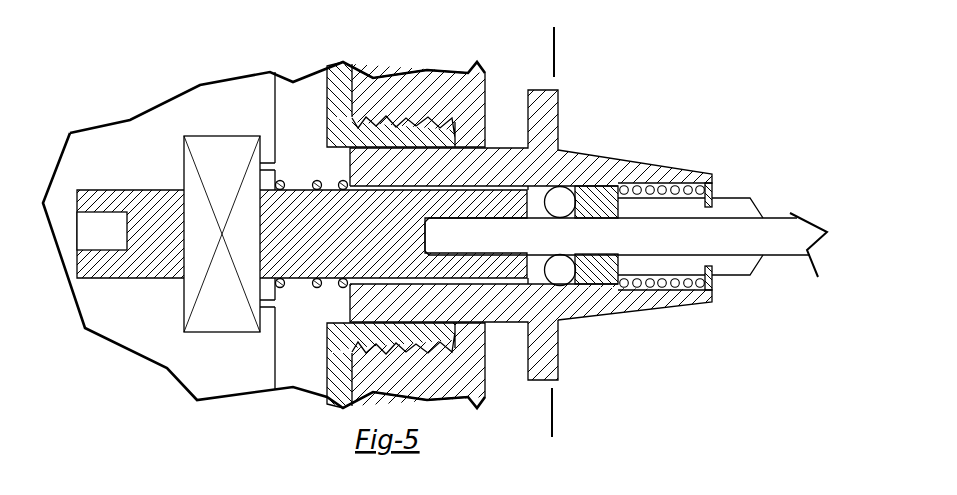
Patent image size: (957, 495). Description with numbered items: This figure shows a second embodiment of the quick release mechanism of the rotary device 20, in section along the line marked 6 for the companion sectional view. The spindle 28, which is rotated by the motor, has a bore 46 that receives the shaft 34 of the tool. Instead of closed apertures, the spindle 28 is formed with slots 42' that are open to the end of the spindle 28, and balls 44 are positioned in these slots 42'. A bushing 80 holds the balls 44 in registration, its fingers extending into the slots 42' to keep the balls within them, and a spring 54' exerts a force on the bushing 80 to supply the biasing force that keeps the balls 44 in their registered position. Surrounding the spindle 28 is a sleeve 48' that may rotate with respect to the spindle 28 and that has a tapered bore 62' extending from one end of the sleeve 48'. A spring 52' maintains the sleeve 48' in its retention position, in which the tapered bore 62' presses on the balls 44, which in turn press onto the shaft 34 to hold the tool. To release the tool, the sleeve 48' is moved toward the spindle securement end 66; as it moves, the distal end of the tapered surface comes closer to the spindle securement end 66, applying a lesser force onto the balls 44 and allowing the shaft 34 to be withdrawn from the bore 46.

The rotary device 20 is at (396, 72).
The spindle 28 is at (143, 260).
The shaft 34 is at (797, 240).
The slots 42' is at (764, 236).
The balls 44 is at (607, 202).
The bore 46 is at (488, 238).
The sleeve 48' is at (635, 265).
The spring 52' is at (672, 280).
The spring 54' is at (305, 324).
The tapered bore 62' is at (583, 184).
The spindle securement end 66 is at (110, 198).
The bushing 80 is at (633, 167).
The section line 6- 6 is at (607, 428).